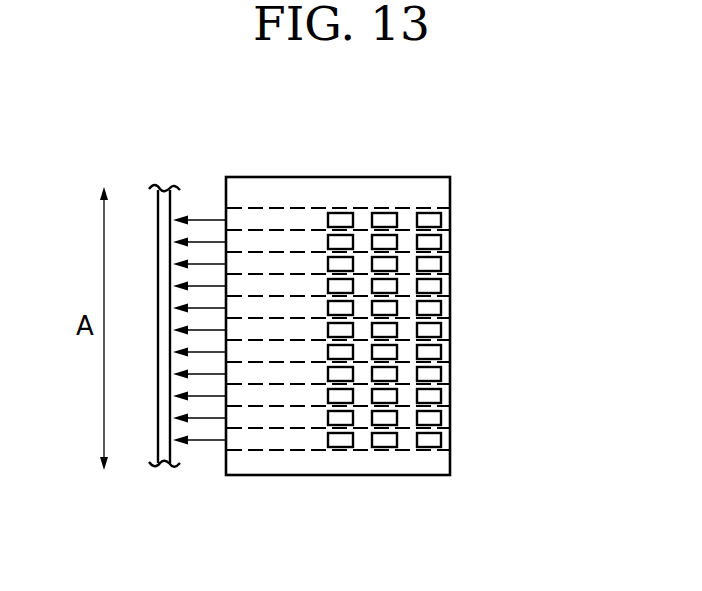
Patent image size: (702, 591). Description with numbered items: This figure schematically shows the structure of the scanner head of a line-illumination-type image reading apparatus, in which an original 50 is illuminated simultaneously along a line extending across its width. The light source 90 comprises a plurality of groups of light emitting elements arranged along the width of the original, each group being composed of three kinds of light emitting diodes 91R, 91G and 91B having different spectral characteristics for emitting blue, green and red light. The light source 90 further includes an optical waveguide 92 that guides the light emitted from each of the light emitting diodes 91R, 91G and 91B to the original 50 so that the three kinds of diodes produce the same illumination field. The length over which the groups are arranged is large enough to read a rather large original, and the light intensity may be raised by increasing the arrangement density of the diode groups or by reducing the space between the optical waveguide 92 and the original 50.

The original 50 is at (161, 440).
The light source 90 is at (415, 331).
The optical waveguide 92 is at (443, 198).
The light emitting diode 91R is at (333, 212).
The light emitting diode 91G is at (387, 212).
The light emitting diode 91B is at (428, 212).